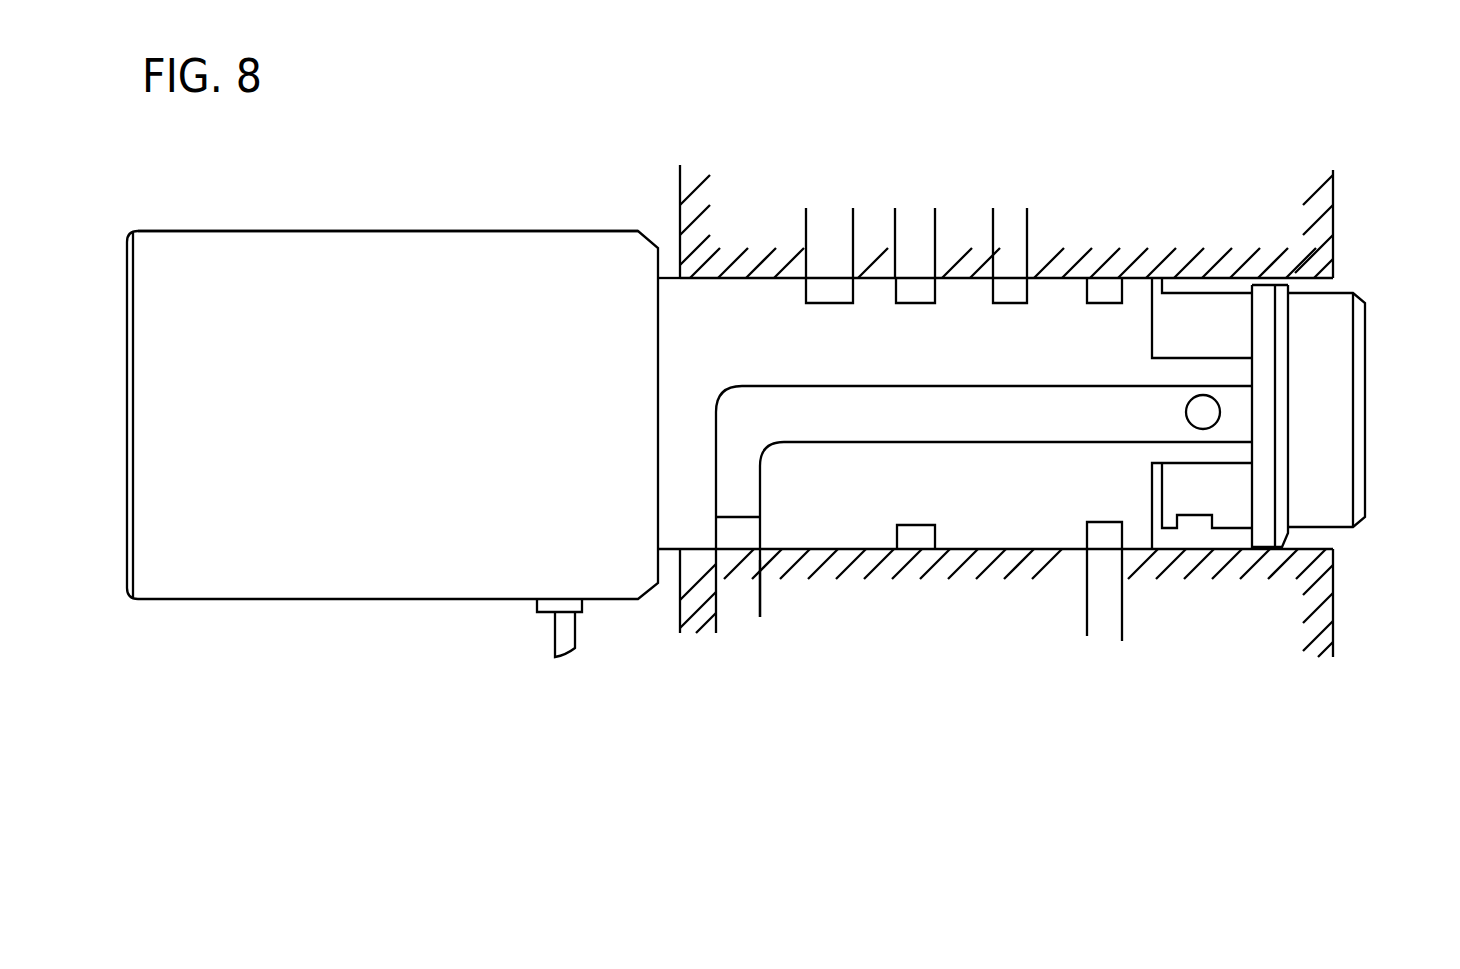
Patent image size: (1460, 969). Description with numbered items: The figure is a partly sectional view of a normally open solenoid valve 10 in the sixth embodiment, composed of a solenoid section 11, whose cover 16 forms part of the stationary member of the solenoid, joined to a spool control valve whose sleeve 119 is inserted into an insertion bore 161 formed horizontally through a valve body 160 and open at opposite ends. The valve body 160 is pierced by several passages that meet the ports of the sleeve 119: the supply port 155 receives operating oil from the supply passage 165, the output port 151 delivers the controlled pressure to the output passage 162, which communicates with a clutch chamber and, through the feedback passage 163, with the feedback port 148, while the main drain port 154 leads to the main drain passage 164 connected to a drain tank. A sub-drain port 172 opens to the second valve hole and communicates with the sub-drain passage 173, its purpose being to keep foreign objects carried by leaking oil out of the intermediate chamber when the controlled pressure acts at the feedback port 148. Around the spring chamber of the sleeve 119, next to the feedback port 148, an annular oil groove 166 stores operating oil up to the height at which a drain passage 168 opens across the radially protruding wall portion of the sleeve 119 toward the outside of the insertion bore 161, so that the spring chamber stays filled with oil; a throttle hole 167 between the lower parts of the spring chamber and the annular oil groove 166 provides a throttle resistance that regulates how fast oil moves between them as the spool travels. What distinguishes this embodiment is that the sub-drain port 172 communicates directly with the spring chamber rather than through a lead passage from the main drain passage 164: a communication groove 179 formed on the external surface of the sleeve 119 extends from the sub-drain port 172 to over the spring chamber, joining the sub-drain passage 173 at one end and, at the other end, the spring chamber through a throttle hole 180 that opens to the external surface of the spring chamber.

The solenoid valve 10 is at (614, 198).
The solenoid section 11 is at (490, 220).
The cover 16 is at (405, 246).
The sleeve 119 is at (1340, 353).
The feedback port 148 is at (813, 290).
The output port 151 is at (1018, 288).
The main drain port 154 is at (1102, 535).
The supply port 155 is at (931, 289).
The valve body 160 is at (1320, 214).
The insertion bore 161 is at (1320, 540).
The output passage 162 is at (1028, 216).
The feedback passage 163 is at (816, 239).
The main drain passage 164 is at (1113, 617).
The supply passage 165 is at (924, 215).
The annular oil groove 166 is at (1236, 540).
The throttle hole 167 is at (1191, 532).
The drain passage 168 is at (1270, 280).
The sub-drain port 172 is at (747, 532).
The sub-drain passage 173 is at (748, 613).
The communication groove 179 is at (883, 430).
The throttle hole 180 is at (1222, 412).